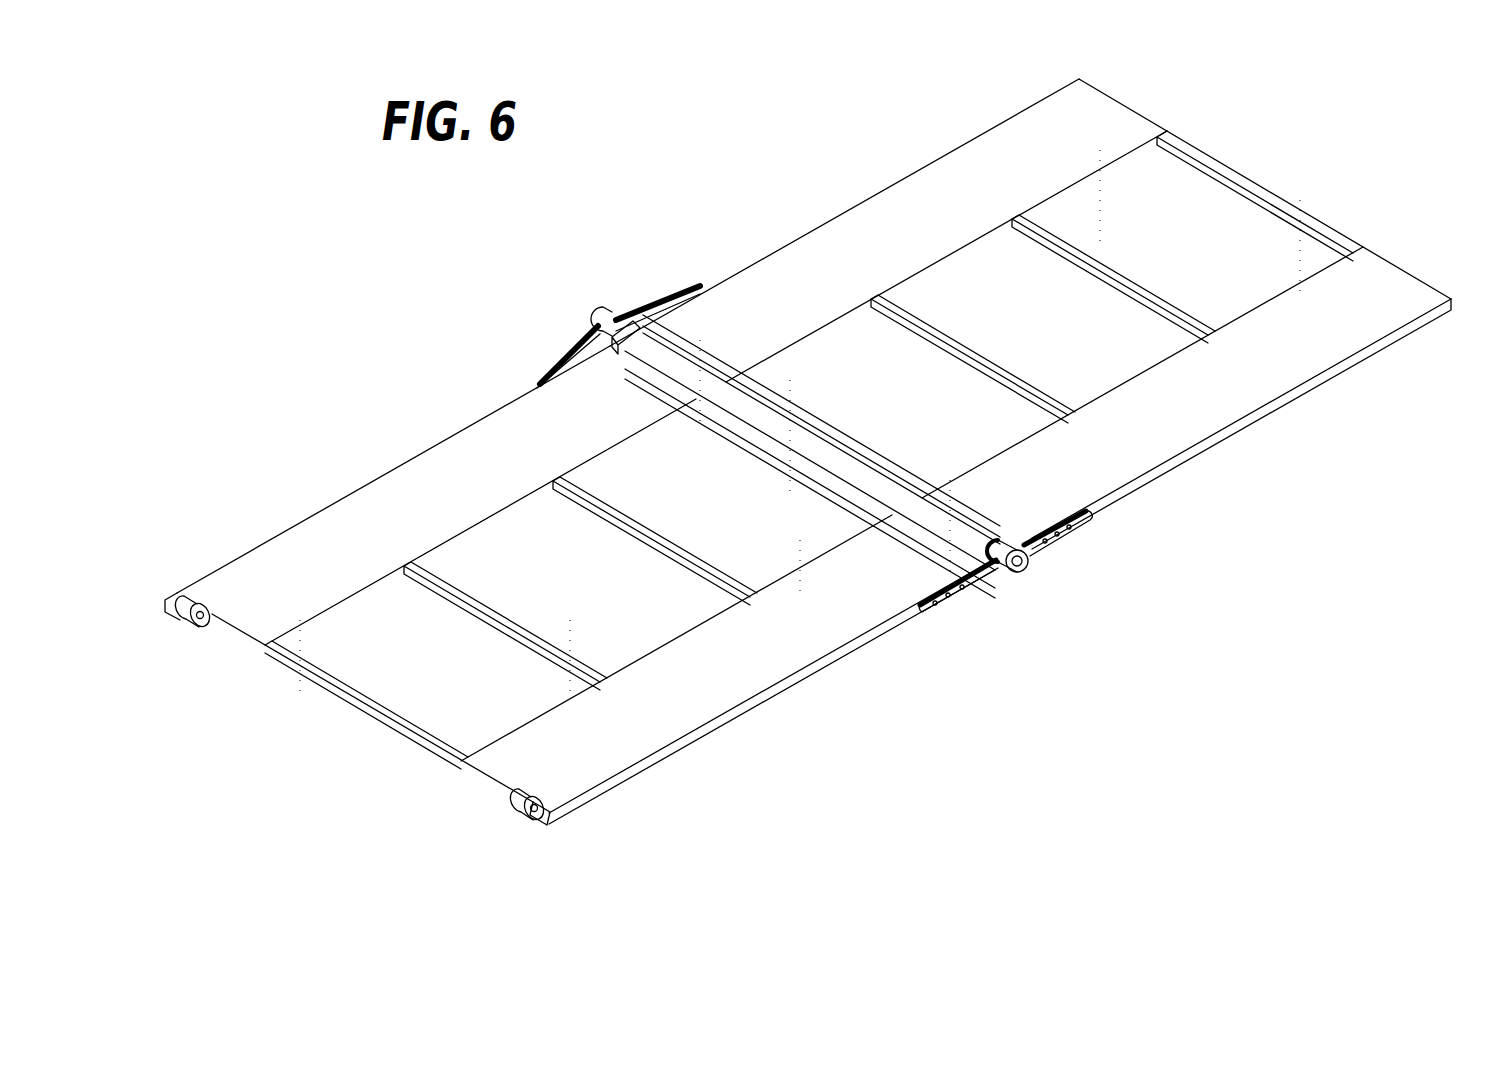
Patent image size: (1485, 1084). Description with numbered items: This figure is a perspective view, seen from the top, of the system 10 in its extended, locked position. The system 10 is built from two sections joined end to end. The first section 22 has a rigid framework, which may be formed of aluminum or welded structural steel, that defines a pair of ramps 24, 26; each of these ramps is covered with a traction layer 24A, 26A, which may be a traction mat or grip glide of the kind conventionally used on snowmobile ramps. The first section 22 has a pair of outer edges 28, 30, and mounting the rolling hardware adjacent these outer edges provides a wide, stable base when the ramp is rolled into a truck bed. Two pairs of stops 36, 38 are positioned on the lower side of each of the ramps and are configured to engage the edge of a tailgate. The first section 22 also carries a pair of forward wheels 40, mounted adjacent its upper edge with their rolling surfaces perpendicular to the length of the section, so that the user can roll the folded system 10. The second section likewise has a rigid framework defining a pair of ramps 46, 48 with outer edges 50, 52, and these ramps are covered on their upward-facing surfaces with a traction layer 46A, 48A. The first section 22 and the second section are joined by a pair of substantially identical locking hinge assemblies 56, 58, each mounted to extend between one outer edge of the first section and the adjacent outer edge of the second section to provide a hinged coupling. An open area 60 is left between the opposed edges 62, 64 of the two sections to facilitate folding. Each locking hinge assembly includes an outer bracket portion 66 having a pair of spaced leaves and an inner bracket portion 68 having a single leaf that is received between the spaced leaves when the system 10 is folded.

The system 10 is at (921, 80).
The first section 22 is at (392, 445).
The ramp 24 is at (636, 790).
The traction layer 24A is at (722, 720).
The ramp 26 is at (281, 506).
The traction layer 26A is at (461, 423).
The outer edge 28 is at (791, 680).
The outer edge 30 is at (333, 497).
The stop 36 is at (856, 655).
The stop 38 is at (886, 633).
The forward wheel 40 is at (196, 614).
The ramp 46 is at (1031, 88).
The traction layer 46A is at (887, 180).
The ramp 48 is at (1362, 385).
The traction layer 48A is at (1250, 417).
The outer edge 50 is at (801, 237).
The outer edge 52 is at (1167, 472).
The locking hinge assembly 56 is at (578, 302).
The locking hinge assembly 58 is at (1046, 578).
The open area 60 is at (841, 478).
The opposed edge 62 is at (778, 442).
The opposed edge 64 is at (819, 437).
The outer bracket portion 66 is at (1044, 541).
The inner bracket portion 68 is at (982, 590).